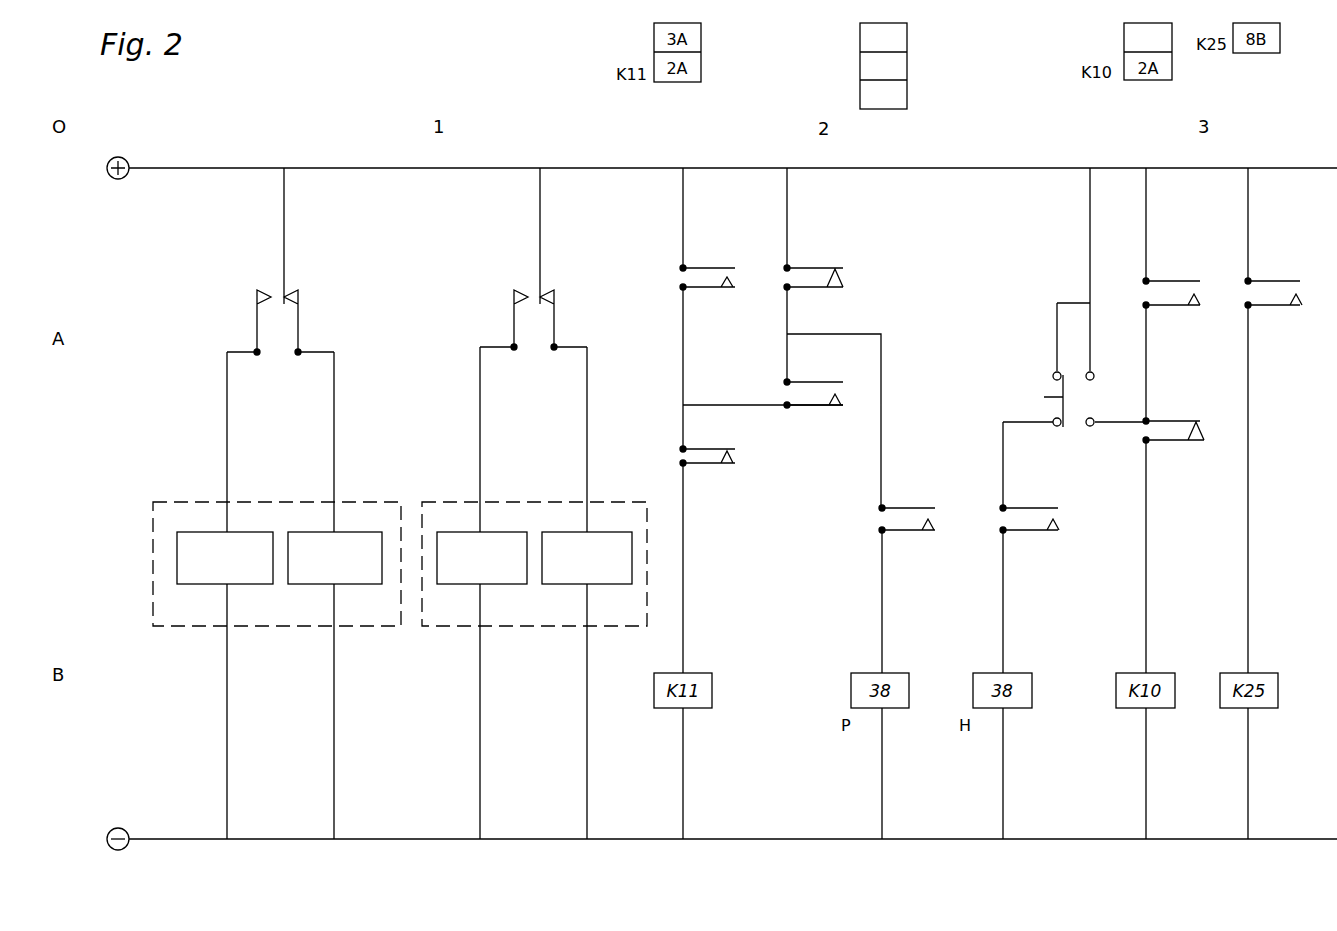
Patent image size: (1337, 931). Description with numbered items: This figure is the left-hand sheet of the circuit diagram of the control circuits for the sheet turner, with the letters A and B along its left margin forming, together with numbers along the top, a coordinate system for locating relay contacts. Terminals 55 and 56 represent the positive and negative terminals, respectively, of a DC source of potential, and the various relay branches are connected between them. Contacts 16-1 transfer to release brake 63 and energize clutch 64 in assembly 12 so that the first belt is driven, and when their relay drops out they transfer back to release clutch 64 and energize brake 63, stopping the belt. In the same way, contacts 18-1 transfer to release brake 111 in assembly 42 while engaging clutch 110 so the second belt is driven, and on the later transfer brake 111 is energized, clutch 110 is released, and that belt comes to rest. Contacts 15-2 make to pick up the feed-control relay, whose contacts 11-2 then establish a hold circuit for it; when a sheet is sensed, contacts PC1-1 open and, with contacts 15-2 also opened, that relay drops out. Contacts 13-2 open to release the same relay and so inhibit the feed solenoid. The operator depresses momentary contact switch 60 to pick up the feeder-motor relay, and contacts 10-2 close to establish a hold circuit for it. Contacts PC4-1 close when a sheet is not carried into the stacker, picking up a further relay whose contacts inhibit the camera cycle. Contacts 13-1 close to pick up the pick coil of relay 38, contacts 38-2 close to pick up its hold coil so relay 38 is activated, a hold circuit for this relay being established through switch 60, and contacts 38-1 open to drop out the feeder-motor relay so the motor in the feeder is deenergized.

The positive terminal 55 is at (117, 179).
The negative terminal 56 is at (146, 813).
The contacts of relay K16 16-1 is at (273, 288).
The contacts of relay K18 18-1 is at (528, 293).
The clutch 64 is at (213, 587).
The brake 63 is at (328, 587).
The assembly 12 is at (201, 628).
The clutch 110 is at (502, 586).
The brake 111 is at (607, 586).
The assembly 42 is at (467, 628).
The contacts of relay K15 15-2 is at (700, 267).
The contacts of photocell unit PC1 PC1-1 is at (803, 267).
The contacts of relay K11 11-2 is at (826, 408).
The contacts of relay K13 13-2 is at (700, 466).
The contacts of relay K13 13-1 is at (899, 533).
The contacts of relay 38 38-2 is at (1021, 533).
The relay 38 is at (860, 66).
The momentary contact switch 60 is at (1062, 389).
The contacts of relay K10 10-2 is at (1167, 307).
The contacts of photocell unit PC4 PC4-1 is at (1267, 307).
The contacts of relay 38 38-1 is at (1162, 443).